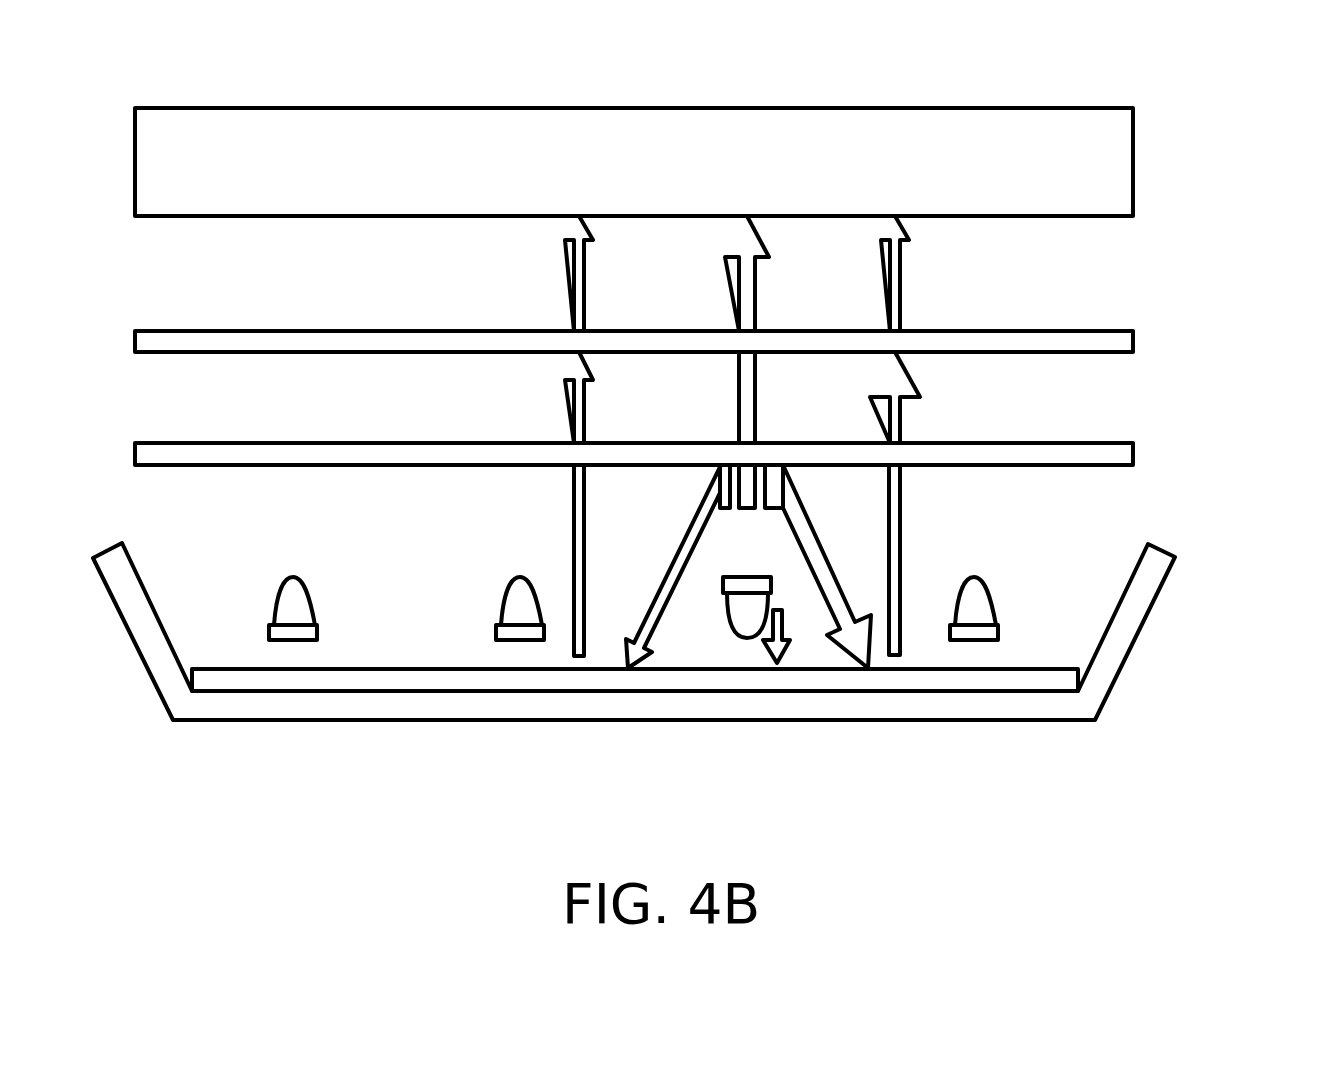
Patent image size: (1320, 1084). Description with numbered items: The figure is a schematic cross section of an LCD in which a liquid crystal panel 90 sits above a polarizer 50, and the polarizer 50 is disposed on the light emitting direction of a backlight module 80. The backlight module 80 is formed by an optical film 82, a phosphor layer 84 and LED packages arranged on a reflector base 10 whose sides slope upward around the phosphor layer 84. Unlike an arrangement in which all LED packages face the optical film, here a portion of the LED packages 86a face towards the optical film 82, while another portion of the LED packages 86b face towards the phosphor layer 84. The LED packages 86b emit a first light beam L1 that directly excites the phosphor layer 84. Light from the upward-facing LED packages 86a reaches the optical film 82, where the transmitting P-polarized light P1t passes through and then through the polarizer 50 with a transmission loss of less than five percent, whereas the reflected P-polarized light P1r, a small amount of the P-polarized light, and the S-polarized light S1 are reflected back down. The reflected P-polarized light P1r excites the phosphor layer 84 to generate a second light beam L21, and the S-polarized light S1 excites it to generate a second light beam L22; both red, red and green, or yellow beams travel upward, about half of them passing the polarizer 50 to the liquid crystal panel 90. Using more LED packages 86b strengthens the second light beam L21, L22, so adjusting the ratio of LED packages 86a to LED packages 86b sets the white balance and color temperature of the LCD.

The liquid crystal panel 90 is at (1120, 161).
The polarizer 50 is at (1120, 343).
The optical film 82 is at (1122, 456).
The backlight module 80 is at (1158, 515).
The reflector base 10 is at (1142, 607).
The phosphor layer 84 is at (1025, 683).
The LED packages 86a is at (285, 605).
The LED packages 86b is at (748, 622).
The first light beam L1 is at (779, 626).
The second light beam L21 is at (573, 535).
The second light beam L22 is at (902, 535).
The transmitting P-polarized light P1t is at (745, 412).
The reflected P-polarized light P1r is at (690, 532).
The S-polarized light S1 is at (800, 528).